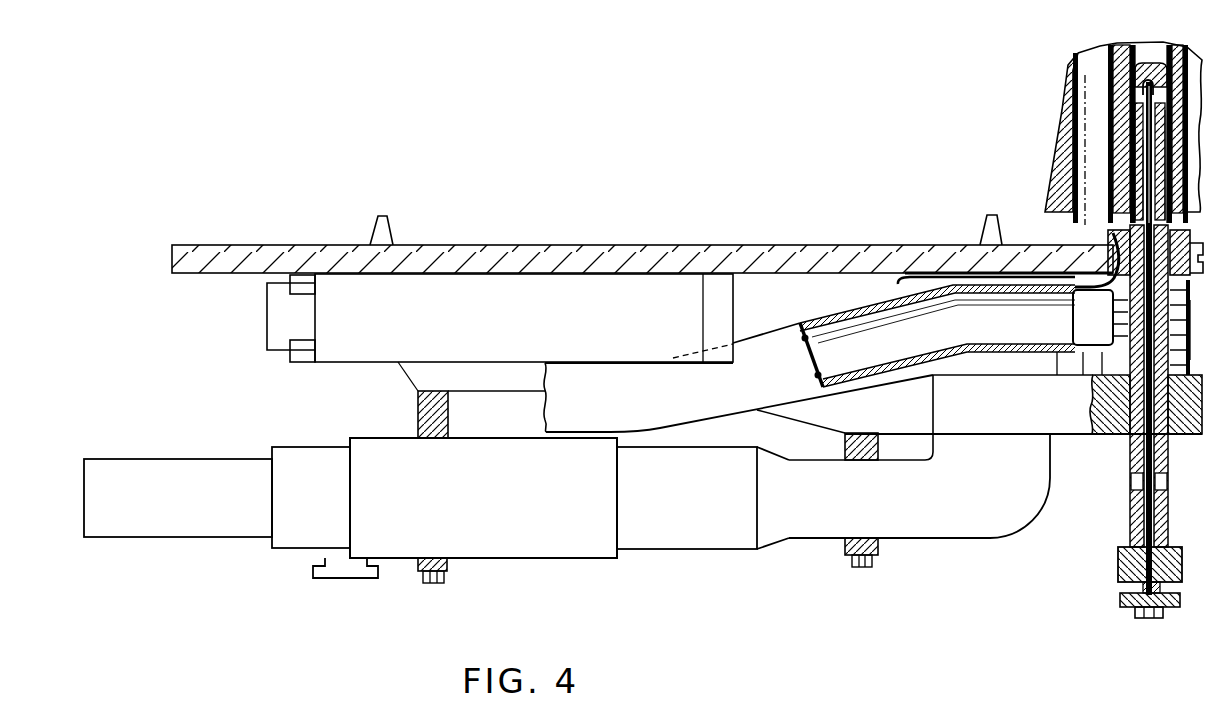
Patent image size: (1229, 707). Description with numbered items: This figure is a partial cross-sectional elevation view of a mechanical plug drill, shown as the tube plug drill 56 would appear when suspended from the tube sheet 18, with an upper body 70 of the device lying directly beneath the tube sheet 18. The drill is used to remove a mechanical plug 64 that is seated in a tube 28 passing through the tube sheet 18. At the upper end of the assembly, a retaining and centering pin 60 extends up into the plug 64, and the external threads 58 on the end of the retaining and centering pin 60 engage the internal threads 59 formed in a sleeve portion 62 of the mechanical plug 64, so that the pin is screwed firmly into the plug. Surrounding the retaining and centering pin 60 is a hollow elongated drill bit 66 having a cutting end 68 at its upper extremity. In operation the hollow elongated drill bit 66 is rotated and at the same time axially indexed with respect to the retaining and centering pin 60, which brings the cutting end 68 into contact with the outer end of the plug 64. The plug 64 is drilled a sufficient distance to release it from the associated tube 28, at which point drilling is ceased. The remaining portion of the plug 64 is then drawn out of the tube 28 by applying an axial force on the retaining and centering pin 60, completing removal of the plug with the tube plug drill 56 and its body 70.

The tube sheet 18 is at (1060, 188).
The tube 28 is at (1130, 45).
The tube plug drill 56 is at (680, 605).
The external threads 58 is at (1146, 90).
The internal threads 59 is at (1150, 88).
The retaining and centering pin 60 is at (1150, 168).
The sleeve portion 62 is at (1138, 80).
The mechanical plug 64 is at (1133, 108).
The hollow elongated drill bit 66 is at (1138, 453).
The cutting end 68 is at (1107, 237).
The upper body 70 is at (514, 321).